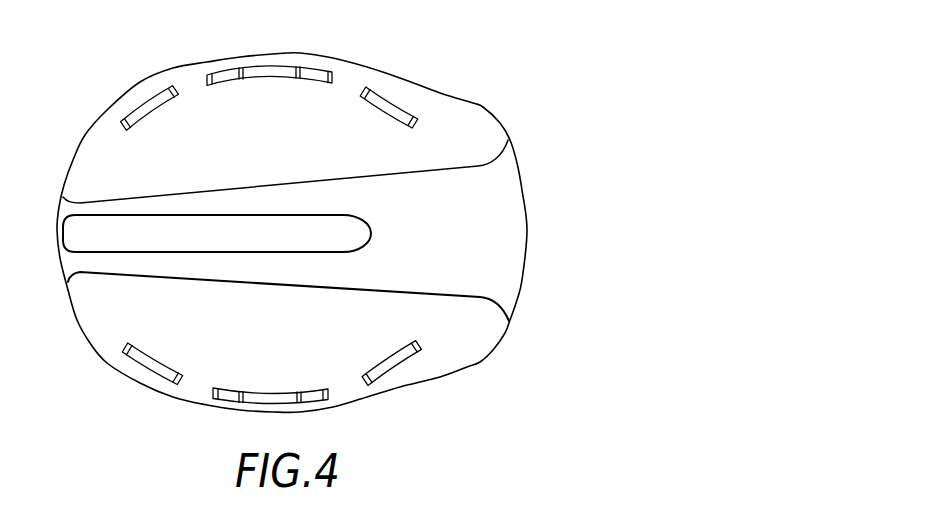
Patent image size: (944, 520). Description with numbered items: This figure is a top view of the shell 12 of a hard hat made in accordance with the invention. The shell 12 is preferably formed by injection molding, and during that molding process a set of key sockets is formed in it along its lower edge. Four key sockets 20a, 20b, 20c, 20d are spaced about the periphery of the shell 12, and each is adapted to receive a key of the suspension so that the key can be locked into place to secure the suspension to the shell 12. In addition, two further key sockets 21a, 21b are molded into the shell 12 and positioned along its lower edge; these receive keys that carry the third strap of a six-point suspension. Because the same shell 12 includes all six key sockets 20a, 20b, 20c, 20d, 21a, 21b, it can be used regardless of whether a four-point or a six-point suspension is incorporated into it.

The shell 12 is at (527, 226).
The key socket 20a is at (399, 363).
The key socket 20b is at (155, 375).
The key socket 20c is at (133, 107).
The key socket 20d is at (375, 93).
The key socket 21a is at (311, 395).
The key socket 21b is at (267, 67).